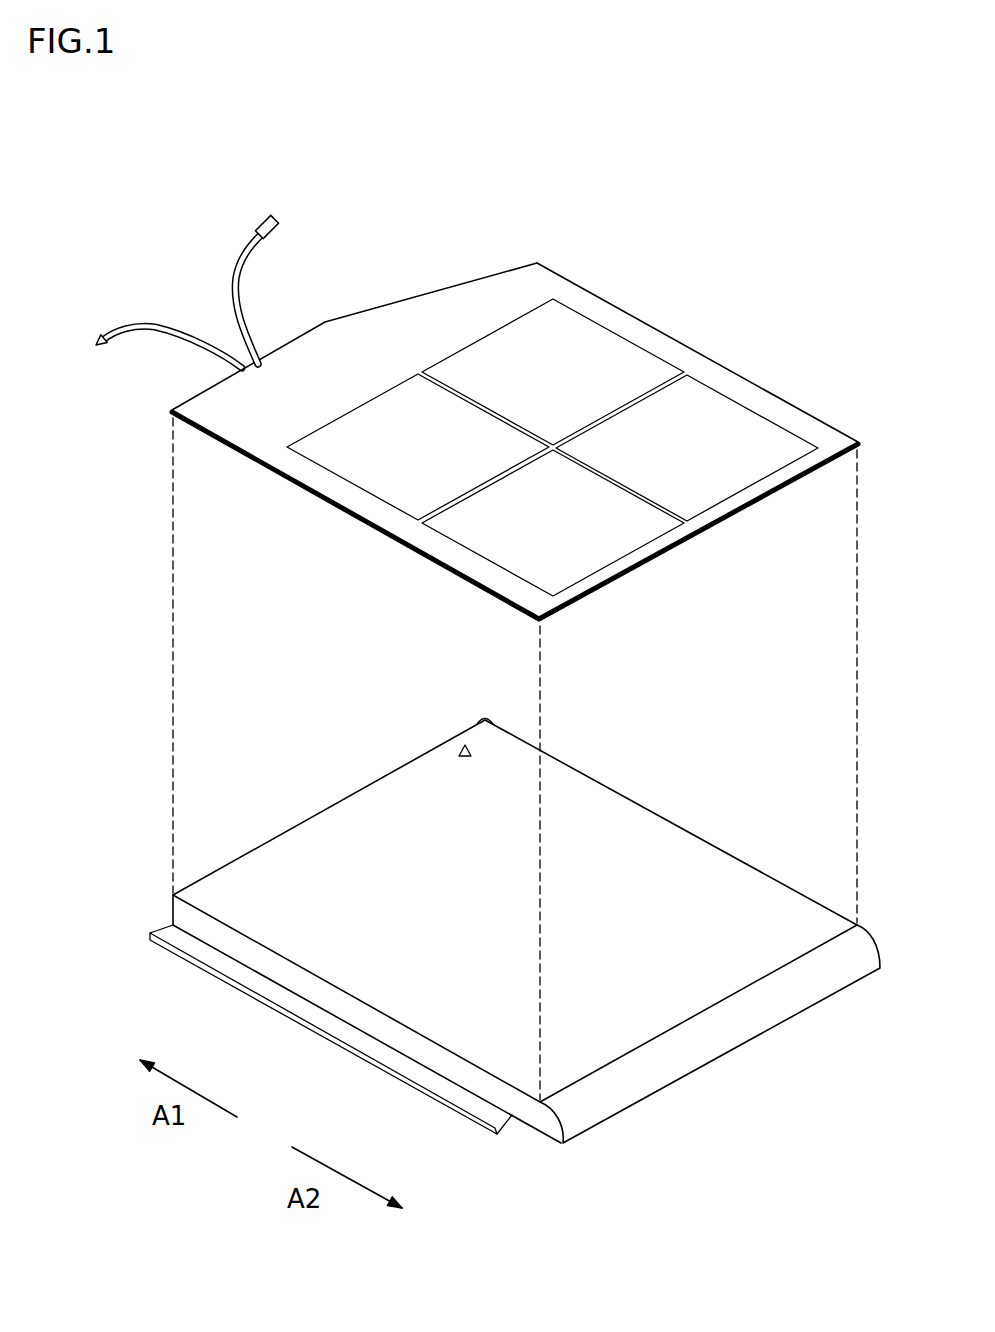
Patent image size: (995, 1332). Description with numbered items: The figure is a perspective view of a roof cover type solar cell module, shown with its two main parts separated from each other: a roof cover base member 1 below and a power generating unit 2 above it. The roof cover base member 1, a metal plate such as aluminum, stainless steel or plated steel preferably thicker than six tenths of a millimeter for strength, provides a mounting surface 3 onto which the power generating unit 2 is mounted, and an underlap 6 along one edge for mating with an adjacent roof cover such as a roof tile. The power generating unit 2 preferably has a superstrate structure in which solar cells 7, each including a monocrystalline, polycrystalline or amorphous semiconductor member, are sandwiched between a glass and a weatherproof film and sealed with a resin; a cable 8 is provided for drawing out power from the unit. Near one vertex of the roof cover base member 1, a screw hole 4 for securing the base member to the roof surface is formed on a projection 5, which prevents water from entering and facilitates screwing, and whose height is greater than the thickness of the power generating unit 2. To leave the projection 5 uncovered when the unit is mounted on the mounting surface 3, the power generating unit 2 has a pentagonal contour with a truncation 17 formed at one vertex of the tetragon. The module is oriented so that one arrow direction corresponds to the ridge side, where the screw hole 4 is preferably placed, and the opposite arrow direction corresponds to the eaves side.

The roof cover base member 1 is at (682, 837).
The power generating unit 2 is at (620, 316).
The mounting surface 3 is at (762, 907).
The screw hole 4 is at (465, 747).
The projection 5 is at (460, 753).
The underlap 6 is at (340, 1032).
The solar cells 7 is at (723, 440).
The cable 8 is at (239, 253).
The truncation 17 is at (437, 290).